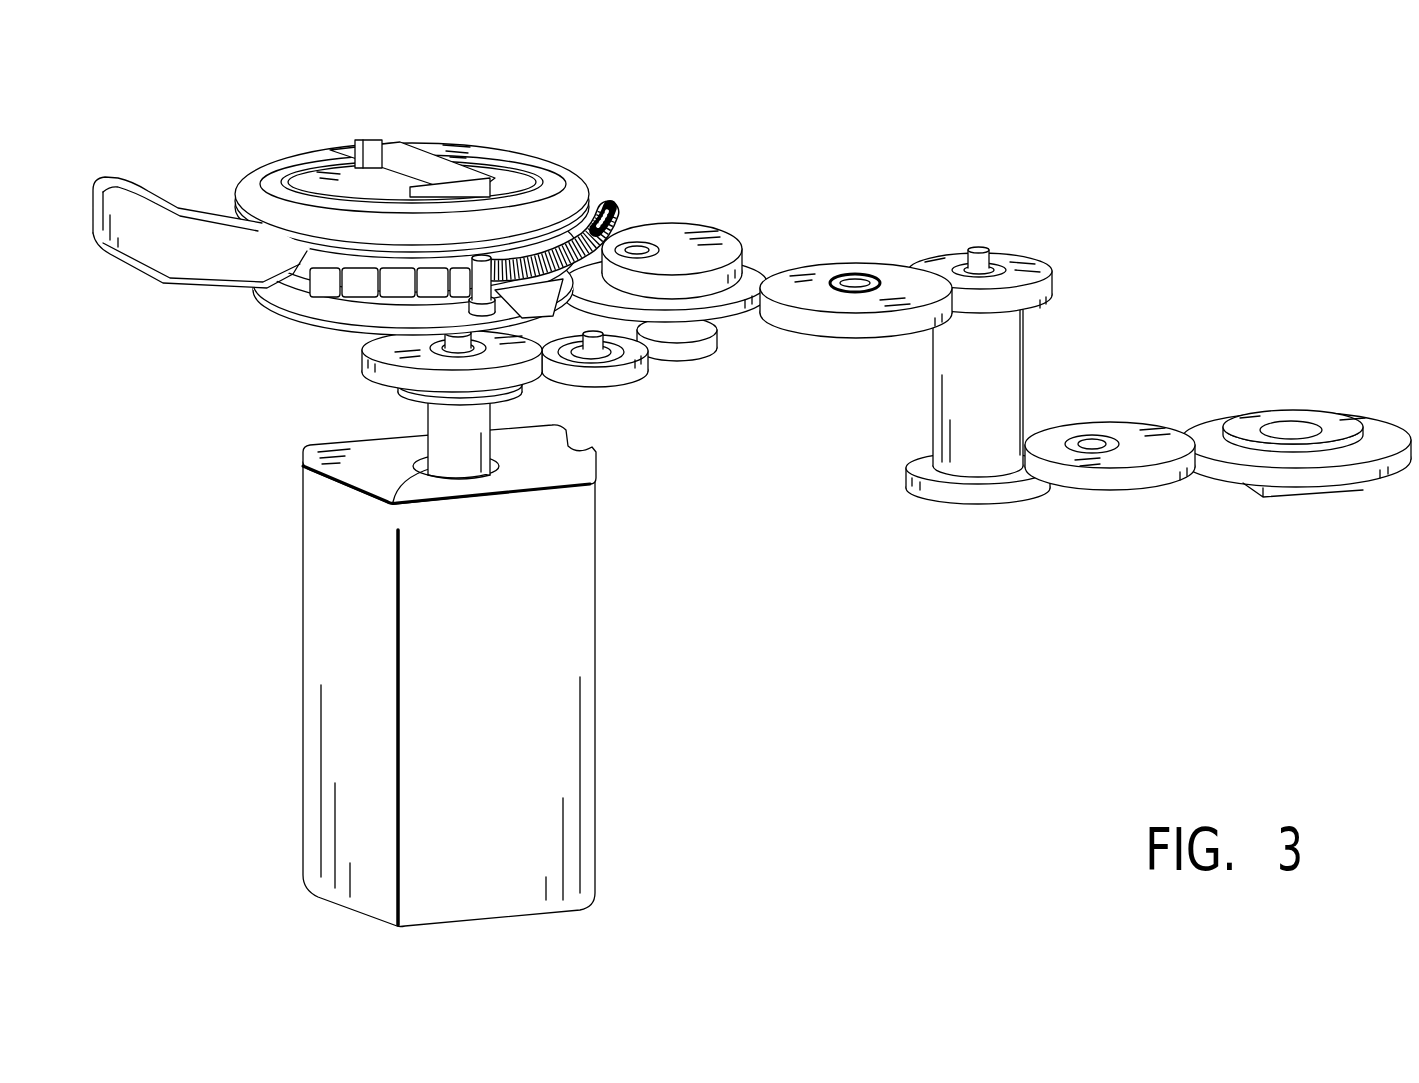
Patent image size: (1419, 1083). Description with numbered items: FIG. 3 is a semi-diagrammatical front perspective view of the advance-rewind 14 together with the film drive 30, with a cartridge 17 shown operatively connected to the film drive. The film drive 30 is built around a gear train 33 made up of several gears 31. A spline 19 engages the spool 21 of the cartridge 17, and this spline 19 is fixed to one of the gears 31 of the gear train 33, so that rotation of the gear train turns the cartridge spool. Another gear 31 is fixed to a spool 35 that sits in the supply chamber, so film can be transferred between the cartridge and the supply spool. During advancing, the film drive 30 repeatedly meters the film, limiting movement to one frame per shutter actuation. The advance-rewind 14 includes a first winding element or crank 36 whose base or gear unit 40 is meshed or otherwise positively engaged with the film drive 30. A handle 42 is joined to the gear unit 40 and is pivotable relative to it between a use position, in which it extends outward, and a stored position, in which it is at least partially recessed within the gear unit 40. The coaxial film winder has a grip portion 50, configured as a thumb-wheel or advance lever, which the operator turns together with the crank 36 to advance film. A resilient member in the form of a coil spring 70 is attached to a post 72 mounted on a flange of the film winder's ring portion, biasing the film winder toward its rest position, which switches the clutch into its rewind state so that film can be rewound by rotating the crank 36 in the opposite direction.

The advance-rewind 14 is at (366, 226).
The cartridge 17 is at (484, 676).
The spline 19 is at (424, 450).
The spool 21 is at (394, 493).
The film drive 30 is at (854, 332).
The gears 31 is at (358, 363).
The gear train 33 is at (803, 320).
The spool 35 is at (1018, 342).
The crank 36 is at (386, 226).
The gear unit 40 is at (297, 162).
The handle 42 is at (483, 177).
The grip portion 50 is at (131, 253).
The coil spring 70 is at (597, 222).
The post 72 is at (497, 293).